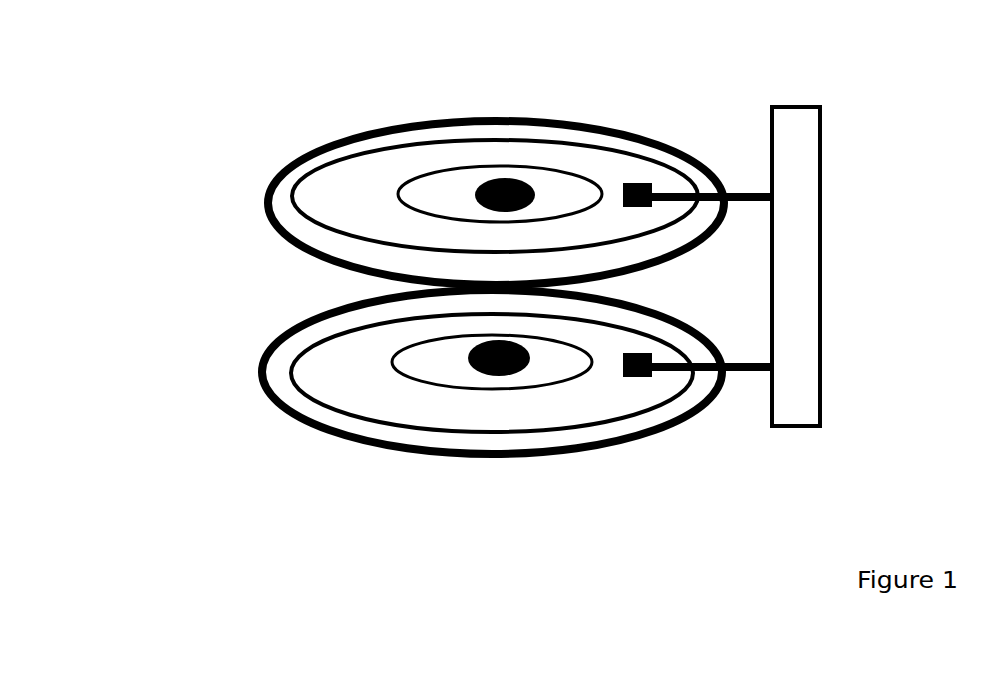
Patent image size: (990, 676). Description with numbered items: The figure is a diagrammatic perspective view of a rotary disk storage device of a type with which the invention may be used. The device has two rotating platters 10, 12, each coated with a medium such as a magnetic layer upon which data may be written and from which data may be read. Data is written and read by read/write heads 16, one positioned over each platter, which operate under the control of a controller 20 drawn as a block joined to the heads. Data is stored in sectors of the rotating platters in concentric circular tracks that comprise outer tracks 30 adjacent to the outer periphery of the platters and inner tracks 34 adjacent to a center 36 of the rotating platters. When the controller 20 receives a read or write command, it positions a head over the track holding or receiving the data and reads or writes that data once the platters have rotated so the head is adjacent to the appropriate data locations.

The rotating platter 10 is at (463, 110).
The rotating platter 12 is at (355, 443).
The read/write head 16 is at (643, 349).
The controller 20 is at (800, 102).
The outer tracks 30 is at (305, 348).
The inner tracks 34 is at (408, 345).
The center 36 is at (529, 181).